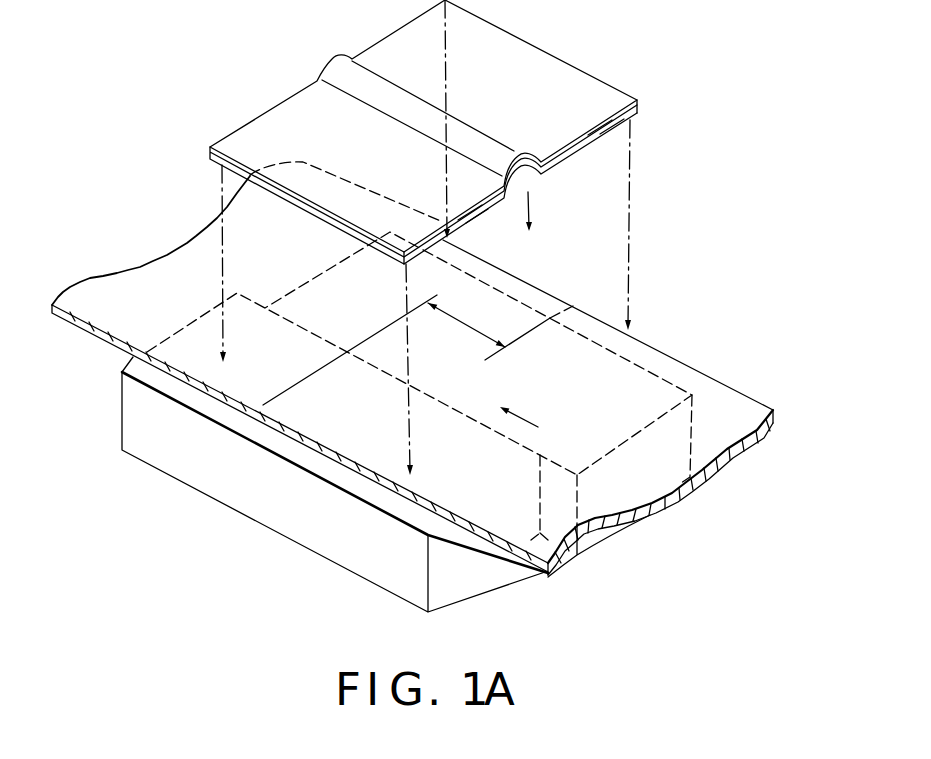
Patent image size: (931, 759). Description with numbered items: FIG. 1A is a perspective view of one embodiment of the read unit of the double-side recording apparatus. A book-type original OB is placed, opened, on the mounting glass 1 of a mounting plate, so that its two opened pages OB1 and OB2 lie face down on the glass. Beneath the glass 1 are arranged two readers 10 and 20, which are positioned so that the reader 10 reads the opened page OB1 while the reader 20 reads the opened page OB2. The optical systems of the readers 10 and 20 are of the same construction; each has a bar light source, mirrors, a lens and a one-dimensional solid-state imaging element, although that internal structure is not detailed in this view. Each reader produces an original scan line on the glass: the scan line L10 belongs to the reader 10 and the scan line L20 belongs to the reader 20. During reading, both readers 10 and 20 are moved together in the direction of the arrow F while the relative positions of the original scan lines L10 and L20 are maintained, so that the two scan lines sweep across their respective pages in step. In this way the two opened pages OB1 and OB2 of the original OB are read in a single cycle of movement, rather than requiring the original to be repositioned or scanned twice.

The book-type original OB is at (572, 78).
The opened page OB1 is at (493, 212).
The opened page OB2 is at (573, 155).
The mounting glass 1 is at (663, 350).
The reader 10 is at (305, 532).
The reader 20 is at (638, 473).
The original scan line L10 is at (312, 373).
The original scan line L20 is at (515, 348).
The arrow (direction of movement) F is at (508, 409).